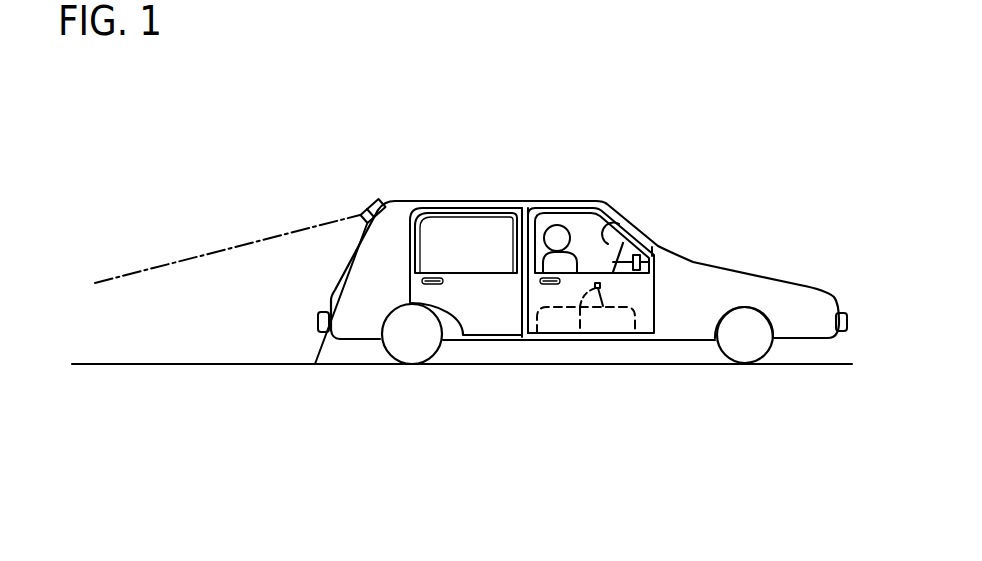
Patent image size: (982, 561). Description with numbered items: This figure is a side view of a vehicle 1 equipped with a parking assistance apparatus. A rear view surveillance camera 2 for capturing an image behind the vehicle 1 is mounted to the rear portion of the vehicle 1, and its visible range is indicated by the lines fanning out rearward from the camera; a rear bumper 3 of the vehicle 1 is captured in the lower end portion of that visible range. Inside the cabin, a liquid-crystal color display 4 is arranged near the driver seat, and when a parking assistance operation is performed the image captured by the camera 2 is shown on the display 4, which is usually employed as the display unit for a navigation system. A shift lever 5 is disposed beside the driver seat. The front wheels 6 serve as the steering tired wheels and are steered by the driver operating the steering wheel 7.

The vehicle 1 is at (485, 203).
The rear view surveillance camera 2 is at (382, 201).
The rear bumper 3 is at (318, 321).
The liquid-crystal color display 4 is at (652, 246).
The shift lever 5 is at (584, 336).
The front wheels 6 is at (747, 353).
The steering wheel 7 is at (612, 223).